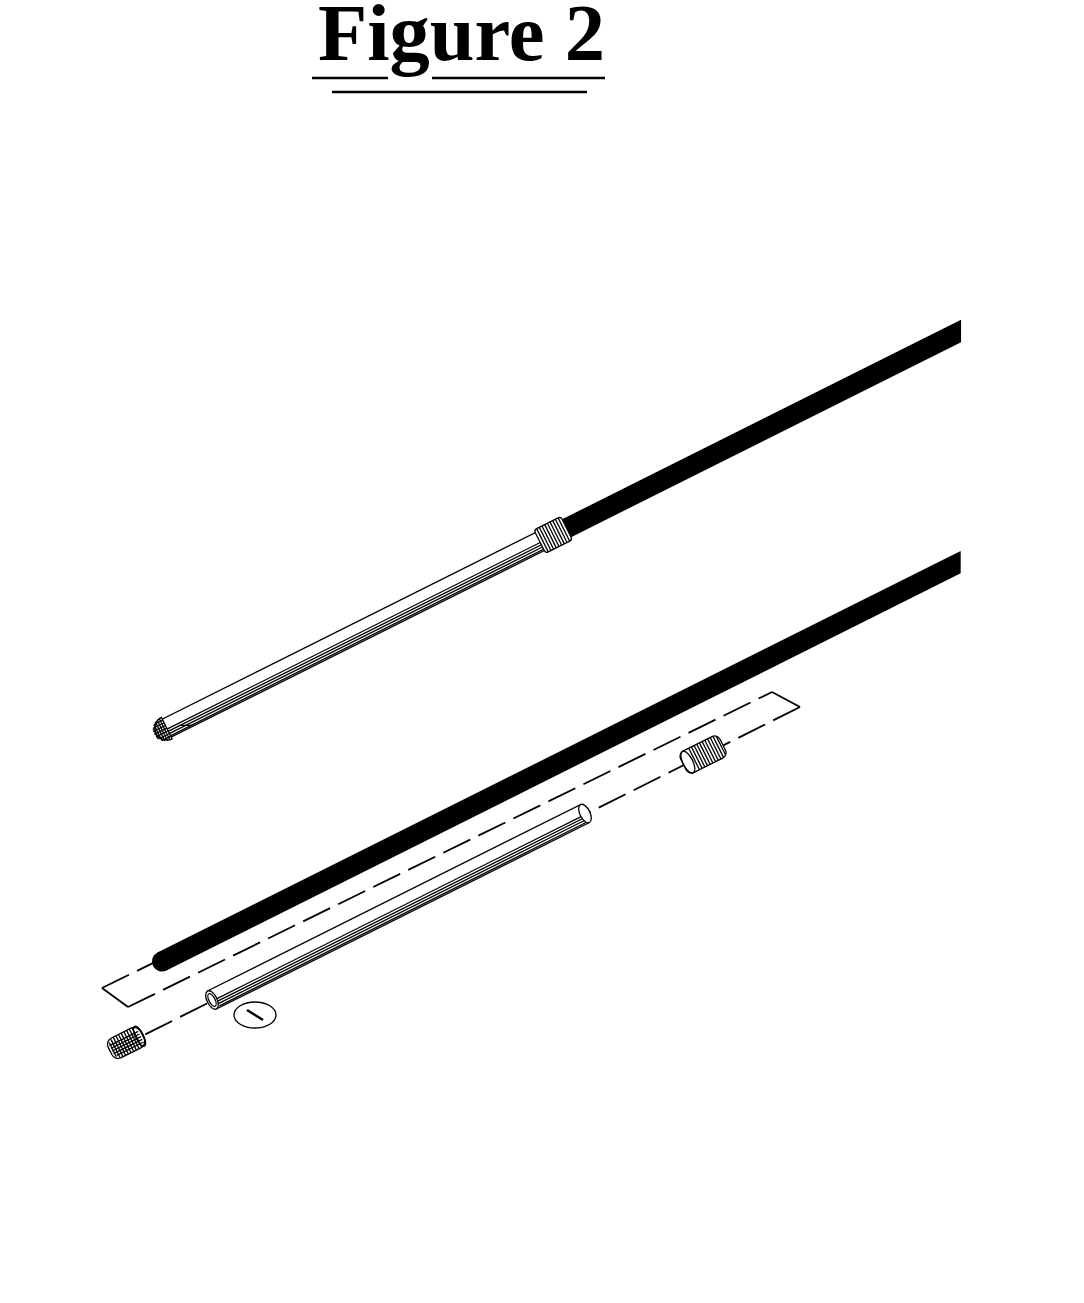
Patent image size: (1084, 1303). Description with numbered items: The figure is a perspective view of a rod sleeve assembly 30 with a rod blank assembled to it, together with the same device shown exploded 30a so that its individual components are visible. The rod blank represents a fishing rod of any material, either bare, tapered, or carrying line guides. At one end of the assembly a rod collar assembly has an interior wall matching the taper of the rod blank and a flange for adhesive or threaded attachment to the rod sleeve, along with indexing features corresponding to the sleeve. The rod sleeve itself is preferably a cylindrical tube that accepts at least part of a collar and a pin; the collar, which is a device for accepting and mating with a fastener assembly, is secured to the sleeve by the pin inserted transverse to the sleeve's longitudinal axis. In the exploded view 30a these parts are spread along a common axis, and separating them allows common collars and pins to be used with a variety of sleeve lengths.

The rod sleeve assembly 30 is at (506, 582).
The exploded rod sleeve assembly 30a is at (521, 880).